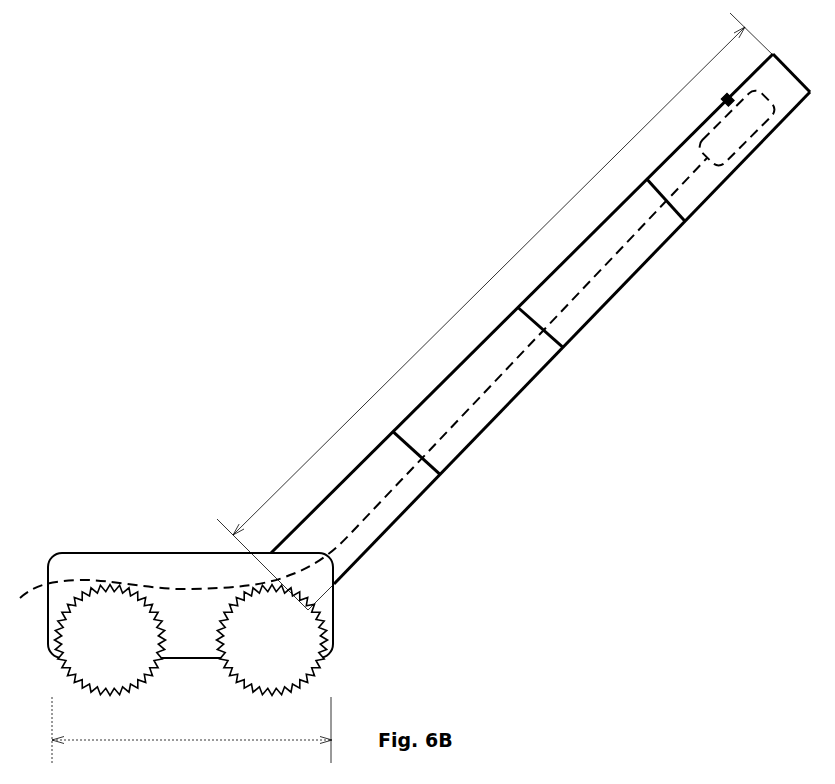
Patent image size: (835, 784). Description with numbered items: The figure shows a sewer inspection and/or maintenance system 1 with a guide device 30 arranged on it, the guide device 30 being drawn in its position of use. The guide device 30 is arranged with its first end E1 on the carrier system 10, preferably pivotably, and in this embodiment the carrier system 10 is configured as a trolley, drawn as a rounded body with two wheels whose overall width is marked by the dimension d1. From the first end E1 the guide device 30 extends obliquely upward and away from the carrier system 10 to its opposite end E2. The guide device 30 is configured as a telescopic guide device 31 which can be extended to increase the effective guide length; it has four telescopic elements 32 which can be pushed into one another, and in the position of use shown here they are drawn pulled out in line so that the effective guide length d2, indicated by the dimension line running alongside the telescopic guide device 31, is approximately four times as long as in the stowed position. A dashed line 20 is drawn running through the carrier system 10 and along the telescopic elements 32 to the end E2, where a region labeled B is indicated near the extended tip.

The sewer inspection and/or maintenance system 1 is at (216, 273).
The carrier system 10 is at (136, 529).
The cable / flexible line 20 is at (726, 94).
The guide device 30 is at (540, 319).
The telescopic guide device 31 is at (606, 398).
The telescopic elements 32 is at (714, 216).
The first end E1 is at (295, 605).
The second end E2 is at (798, 46).
The region B is at (771, 203).
The width of base d1 is at (192, 730).
The effective guide length d2 is at (497, 311).